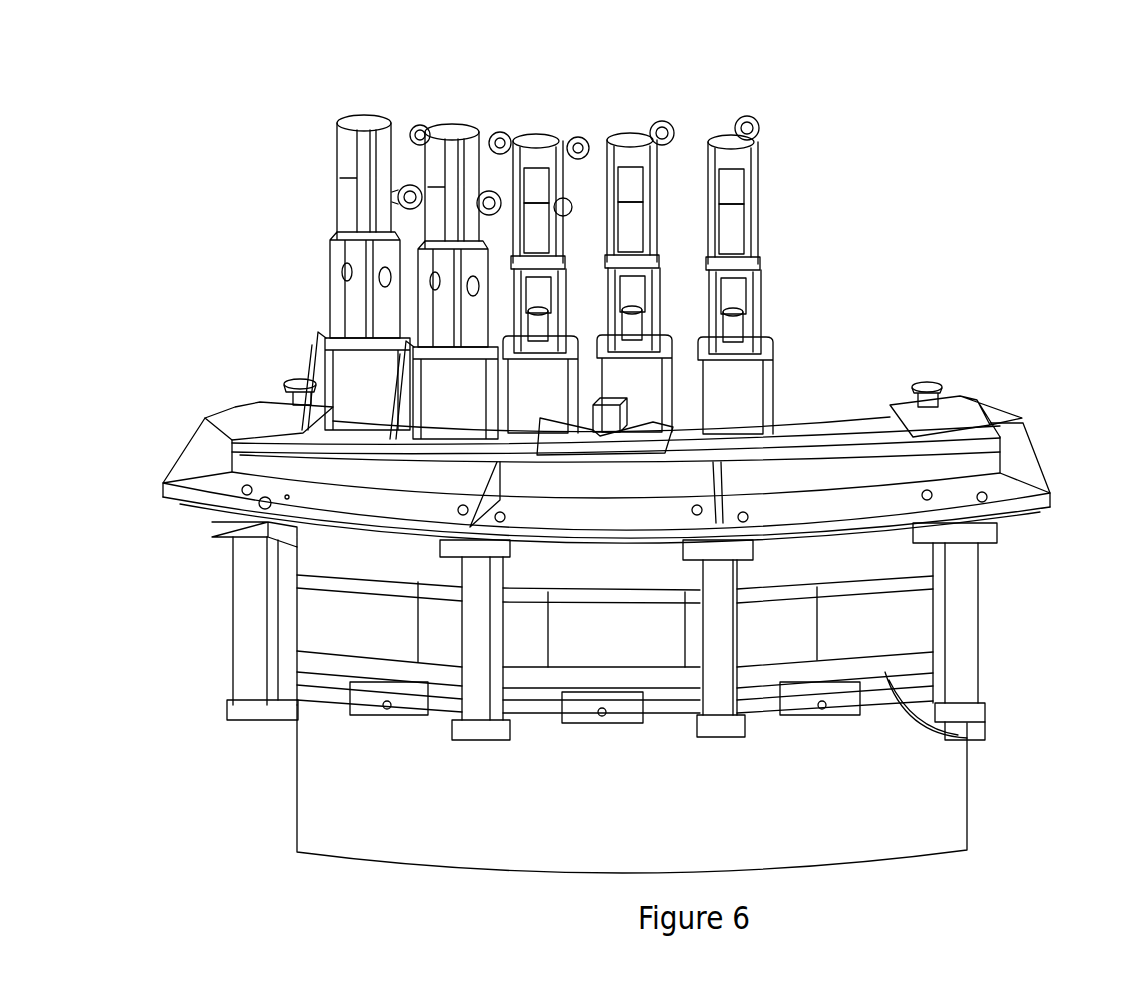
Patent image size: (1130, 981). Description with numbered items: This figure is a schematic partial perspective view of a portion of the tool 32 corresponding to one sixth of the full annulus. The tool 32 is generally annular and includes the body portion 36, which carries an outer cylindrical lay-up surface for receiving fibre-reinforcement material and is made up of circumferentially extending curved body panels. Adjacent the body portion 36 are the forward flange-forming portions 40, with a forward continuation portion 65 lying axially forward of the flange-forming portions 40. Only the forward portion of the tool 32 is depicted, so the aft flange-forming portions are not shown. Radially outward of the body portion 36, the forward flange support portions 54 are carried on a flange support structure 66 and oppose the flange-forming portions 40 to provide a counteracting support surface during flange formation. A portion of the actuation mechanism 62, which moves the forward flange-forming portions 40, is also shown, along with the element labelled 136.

The tool 32 is at (940, 233).
The body portion 36 is at (958, 803).
The forward flange-forming portion 40 is at (308, 610).
The forward flange support portion 54 is at (295, 662).
The actuation mechanism 62 is at (757, 98).
The forward continuation portion 65 is at (310, 550).
The flange support structure 66 is at (1028, 468).
The end support post 136 is at (1030, 574).